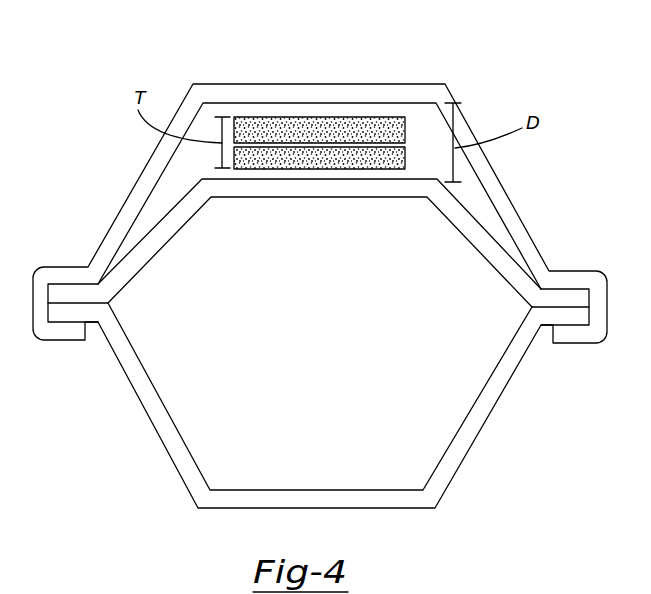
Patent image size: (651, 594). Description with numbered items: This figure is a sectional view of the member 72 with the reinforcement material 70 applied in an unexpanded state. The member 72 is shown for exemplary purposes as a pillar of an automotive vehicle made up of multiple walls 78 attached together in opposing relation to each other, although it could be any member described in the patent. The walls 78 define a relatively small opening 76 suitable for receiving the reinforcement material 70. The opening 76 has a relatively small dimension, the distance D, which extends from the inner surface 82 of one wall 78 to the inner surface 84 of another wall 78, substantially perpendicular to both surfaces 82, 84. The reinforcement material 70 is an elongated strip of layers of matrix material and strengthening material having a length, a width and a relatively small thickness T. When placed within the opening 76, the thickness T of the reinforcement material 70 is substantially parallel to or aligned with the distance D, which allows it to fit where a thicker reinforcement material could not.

The reinforcement material 70 is at (338, 128).
The member 72 is at (498, 425).
The opening 76 is at (231, 130).
The walls 78 is at (513, 337).
The inner surface 82 is at (331, 109).
The inner surface 84 is at (262, 181).